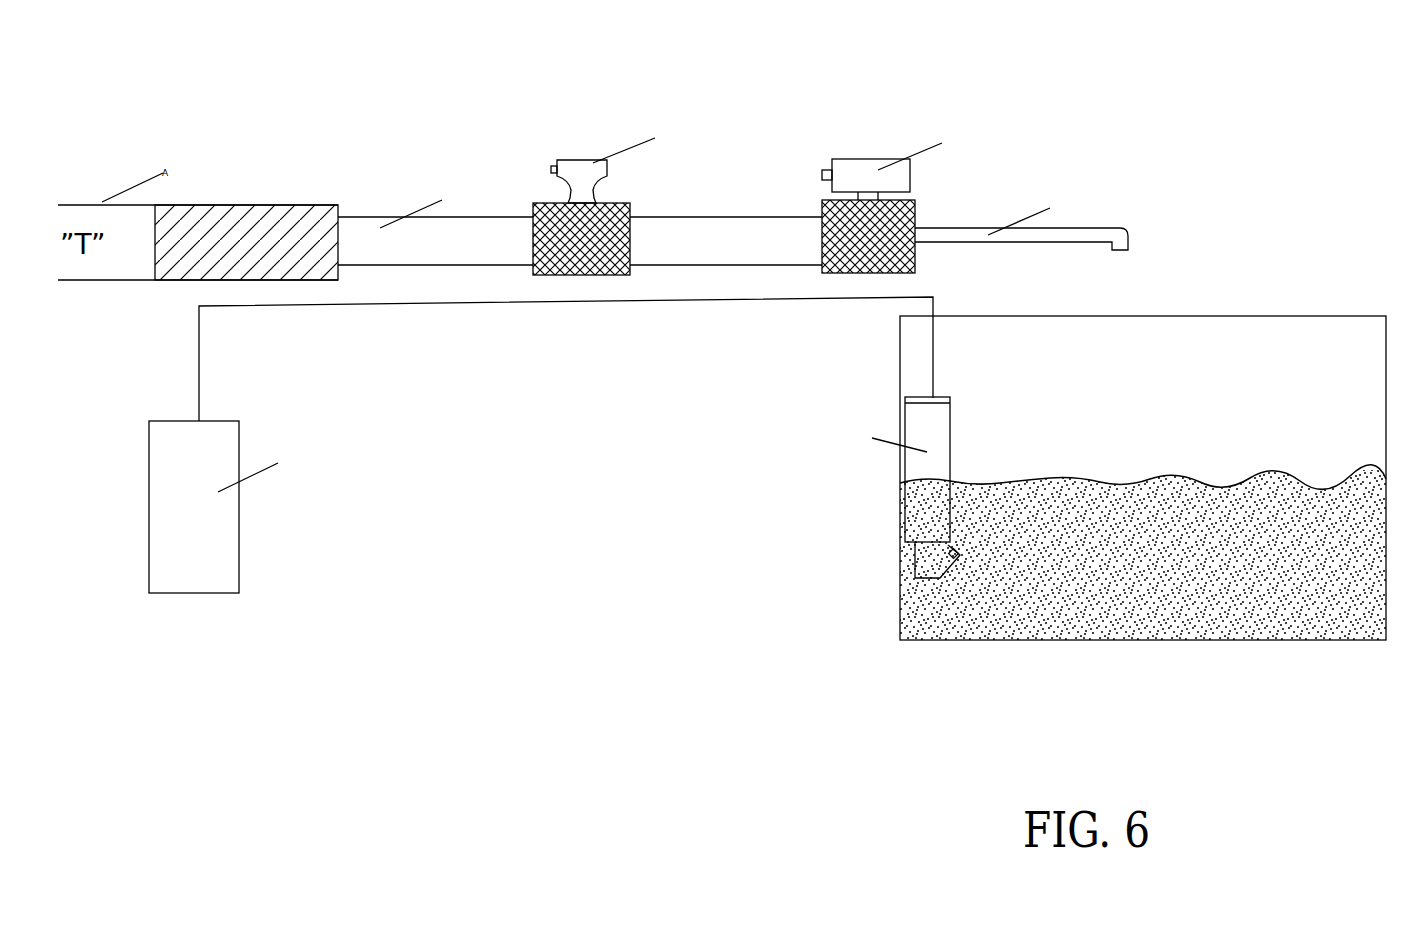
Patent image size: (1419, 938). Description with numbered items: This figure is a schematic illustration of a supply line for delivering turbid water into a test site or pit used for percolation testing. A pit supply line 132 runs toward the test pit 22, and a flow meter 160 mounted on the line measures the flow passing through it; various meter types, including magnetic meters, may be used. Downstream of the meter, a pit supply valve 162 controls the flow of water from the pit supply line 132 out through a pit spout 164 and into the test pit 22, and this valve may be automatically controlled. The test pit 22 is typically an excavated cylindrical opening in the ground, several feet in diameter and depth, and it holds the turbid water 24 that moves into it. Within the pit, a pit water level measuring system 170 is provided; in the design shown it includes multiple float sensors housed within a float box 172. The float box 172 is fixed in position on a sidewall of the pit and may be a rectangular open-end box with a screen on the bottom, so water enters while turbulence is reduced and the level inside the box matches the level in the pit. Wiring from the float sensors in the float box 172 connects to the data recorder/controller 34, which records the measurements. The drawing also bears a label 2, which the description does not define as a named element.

The pit supply line 132 is at (709, 184).
The flow meter 160 is at (580, 170).
The pit supply valve 162 is at (858, 185).
The pit spout 164 is at (1078, 232).
The system 2 is at (793, 115).
The test pit 22 is at (900, 362).
The turbid water 24 is at (970, 602).
The data recorder/controller 34 is at (225, 528).
The pit water level measuring system 170 is at (912, 468).
The float box 172 is at (917, 420).